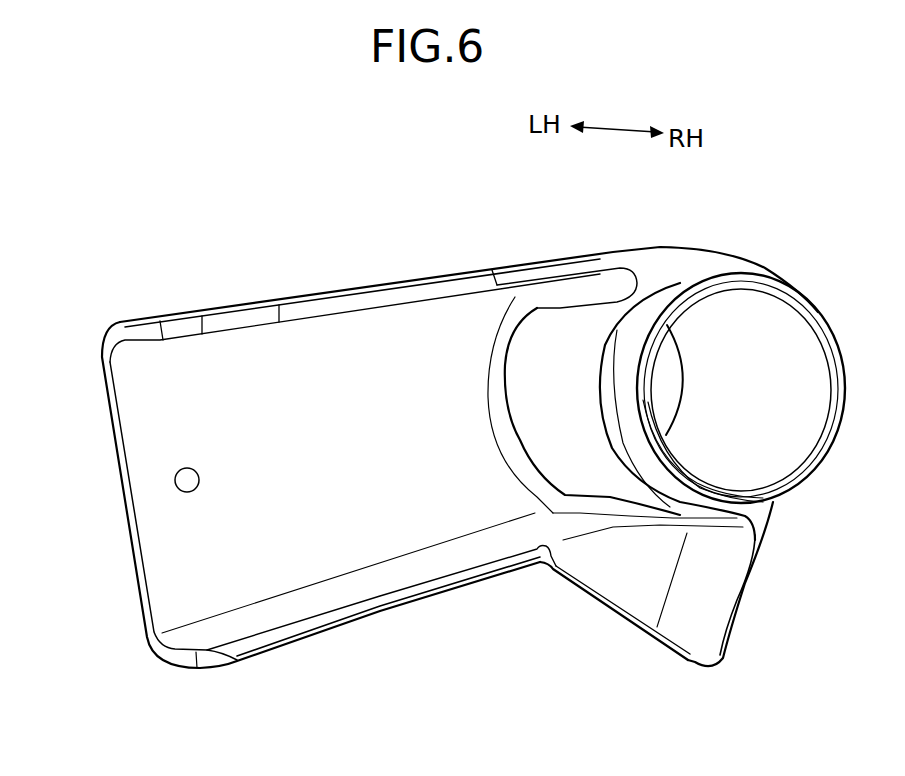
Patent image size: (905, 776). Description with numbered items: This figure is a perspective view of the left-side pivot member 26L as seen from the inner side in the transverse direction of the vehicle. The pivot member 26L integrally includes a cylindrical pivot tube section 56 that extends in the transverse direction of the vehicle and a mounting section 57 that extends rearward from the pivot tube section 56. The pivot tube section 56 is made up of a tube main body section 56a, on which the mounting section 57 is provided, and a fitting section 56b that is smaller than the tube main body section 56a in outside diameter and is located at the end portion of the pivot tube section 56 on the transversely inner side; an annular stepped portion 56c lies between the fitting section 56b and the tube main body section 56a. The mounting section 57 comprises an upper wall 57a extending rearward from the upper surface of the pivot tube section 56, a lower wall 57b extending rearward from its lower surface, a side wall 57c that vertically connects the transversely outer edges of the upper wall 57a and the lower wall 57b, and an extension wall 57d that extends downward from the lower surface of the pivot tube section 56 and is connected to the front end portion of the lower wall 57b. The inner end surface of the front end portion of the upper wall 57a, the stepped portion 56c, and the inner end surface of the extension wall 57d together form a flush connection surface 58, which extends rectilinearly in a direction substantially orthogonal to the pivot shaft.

The pivot member 26L is at (292, 153).
The pivot tube section 56 is at (742, 238).
The tube main body section 56a is at (566, 375).
The fitting section 56b is at (646, 450).
The stepped portion 56c is at (620, 333).
The mounting section 57 is at (152, 314).
The upper wall 57a is at (233, 317).
The lower wall 57b is at (425, 594).
The side wall 57c is at (147, 498).
The extension wall 57d is at (698, 607).
The connection surface 58 is at (758, 558).